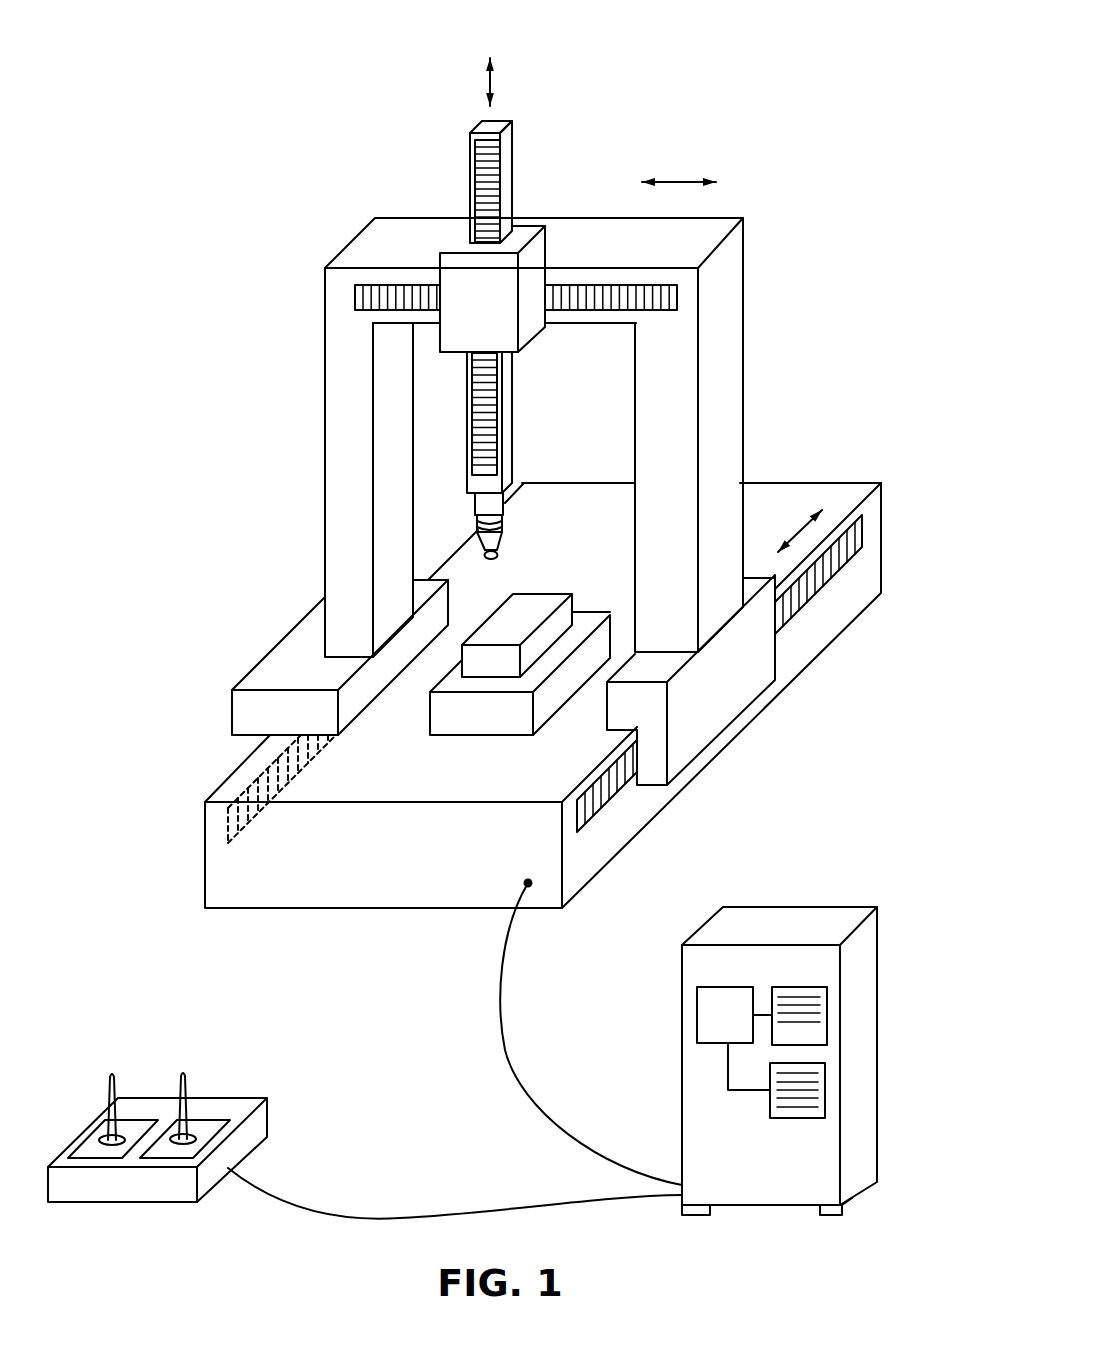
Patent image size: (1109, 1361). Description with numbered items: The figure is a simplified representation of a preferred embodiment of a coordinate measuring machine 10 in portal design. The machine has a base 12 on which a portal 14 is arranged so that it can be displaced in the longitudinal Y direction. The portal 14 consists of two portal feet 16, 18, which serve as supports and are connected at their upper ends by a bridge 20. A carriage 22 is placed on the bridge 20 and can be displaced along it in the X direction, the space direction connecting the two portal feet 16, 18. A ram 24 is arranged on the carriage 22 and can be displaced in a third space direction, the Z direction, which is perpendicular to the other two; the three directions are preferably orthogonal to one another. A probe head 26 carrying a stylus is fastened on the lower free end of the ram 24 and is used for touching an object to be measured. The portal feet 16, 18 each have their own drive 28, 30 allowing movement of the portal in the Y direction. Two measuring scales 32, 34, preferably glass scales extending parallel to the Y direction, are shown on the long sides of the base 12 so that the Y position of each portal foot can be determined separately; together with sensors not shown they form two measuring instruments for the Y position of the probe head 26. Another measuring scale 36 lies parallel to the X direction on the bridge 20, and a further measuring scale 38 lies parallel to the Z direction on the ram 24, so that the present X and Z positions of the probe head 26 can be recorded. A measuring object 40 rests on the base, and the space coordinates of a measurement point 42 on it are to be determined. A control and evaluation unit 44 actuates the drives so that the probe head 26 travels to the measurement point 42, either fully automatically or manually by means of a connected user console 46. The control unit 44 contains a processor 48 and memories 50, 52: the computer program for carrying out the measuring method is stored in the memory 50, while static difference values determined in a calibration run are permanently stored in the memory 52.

The coordinate measuring machine 10 is at (770, 194).
The base 12 is at (230, 878).
The portal 14 is at (313, 497).
The portal foot 16 is at (340, 392).
The portal foot 18 is at (727, 403).
The bridge 20 is at (368, 254).
The carriage 22 is at (463, 245).
The ram 24 is at (485, 125).
The probe head 26 is at (533, 507).
The drive 28 is at (727, 672).
The drive 30 is at (300, 667).
The measuring scale 32 is at (817, 583).
The measuring scale 34 is at (228, 836).
The measuring scale 36 is at (668, 293).
The measuring scale 38 is at (488, 168).
The measuring object 40 is at (500, 708).
The measurement point 42 is at (528, 613).
The control and evaluation unit 44 is at (782, 926).
The user console 46 is at (258, 1072).
The processor 48 is at (707, 997).
The memory 50 is at (812, 1033).
The memory 52 is at (820, 1093).